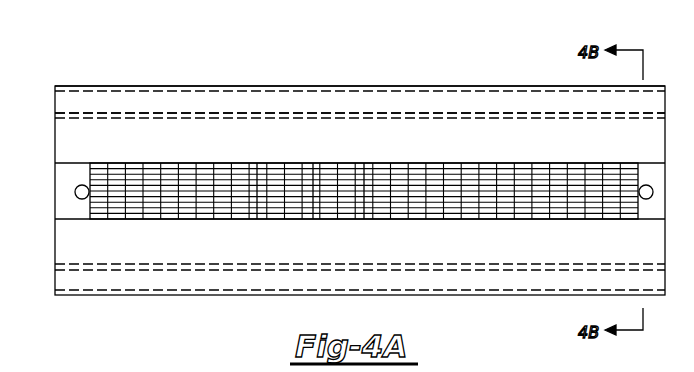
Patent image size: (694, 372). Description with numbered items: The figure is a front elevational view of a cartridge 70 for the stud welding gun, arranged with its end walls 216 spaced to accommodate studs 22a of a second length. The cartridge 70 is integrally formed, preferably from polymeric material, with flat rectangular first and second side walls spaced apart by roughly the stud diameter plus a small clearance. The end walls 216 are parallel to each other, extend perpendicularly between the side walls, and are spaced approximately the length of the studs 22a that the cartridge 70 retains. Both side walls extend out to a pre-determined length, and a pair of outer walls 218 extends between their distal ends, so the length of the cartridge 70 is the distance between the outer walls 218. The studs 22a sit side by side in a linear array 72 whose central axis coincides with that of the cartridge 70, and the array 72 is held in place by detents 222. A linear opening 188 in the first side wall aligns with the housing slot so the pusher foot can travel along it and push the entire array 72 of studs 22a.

The cartridge 70 is at (143, 80).
The outer walls 218 is at (394, 86).
The end walls 216 is at (478, 114).
The linear opening 188 is at (62, 219).
The linear array 72 is at (218, 224).
The studs of a second length 22a is at (364, 173).
The detent 222 is at (79, 187).